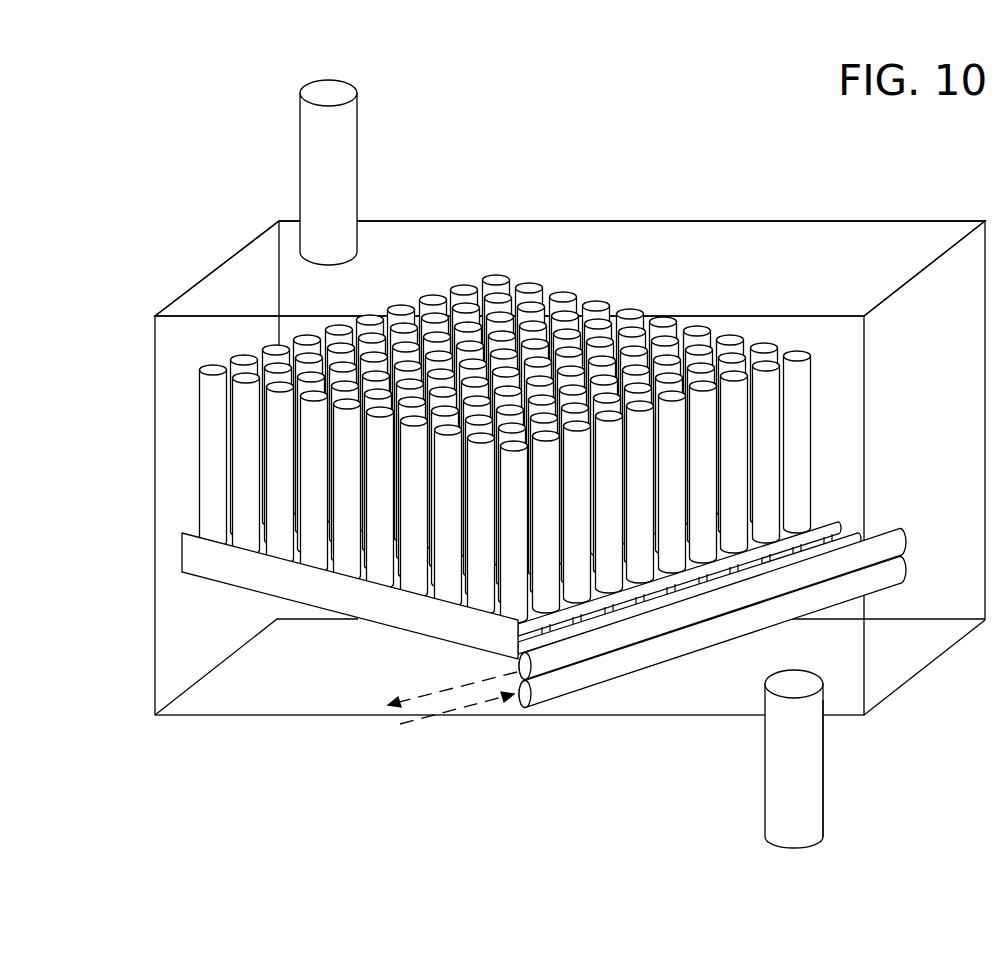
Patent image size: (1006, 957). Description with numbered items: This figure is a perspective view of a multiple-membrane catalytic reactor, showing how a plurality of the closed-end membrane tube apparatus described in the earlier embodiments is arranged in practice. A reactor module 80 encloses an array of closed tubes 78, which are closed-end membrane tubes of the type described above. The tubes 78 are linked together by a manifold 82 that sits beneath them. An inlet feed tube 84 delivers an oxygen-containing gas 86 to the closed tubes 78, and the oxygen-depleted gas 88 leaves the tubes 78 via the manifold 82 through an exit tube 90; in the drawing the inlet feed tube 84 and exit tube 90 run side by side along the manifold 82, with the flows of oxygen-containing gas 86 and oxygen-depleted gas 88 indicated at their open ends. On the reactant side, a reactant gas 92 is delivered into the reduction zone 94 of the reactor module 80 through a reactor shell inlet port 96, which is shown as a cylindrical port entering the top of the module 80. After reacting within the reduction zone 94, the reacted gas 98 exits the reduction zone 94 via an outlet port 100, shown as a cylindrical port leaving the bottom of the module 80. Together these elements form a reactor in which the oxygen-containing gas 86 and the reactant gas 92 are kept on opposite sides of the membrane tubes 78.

The closed tubes 78 is at (593, 300).
The reactor module 80 is at (470, 220).
The manifold 82 is at (305, 592).
The inlet feed tube 84 is at (632, 657).
The oxygen-containing gas 86 is at (440, 722).
The oxygen-depleted gas 88 is at (432, 692).
The exit tube 90 is at (580, 652).
The reactant gas 92 is at (330, 88).
The reduction zone 94 is at (255, 306).
The reactor shell inlet port 96 is at (296, 138).
The reacted gas 98 is at (836, 783).
The outlet port 100 is at (823, 780).